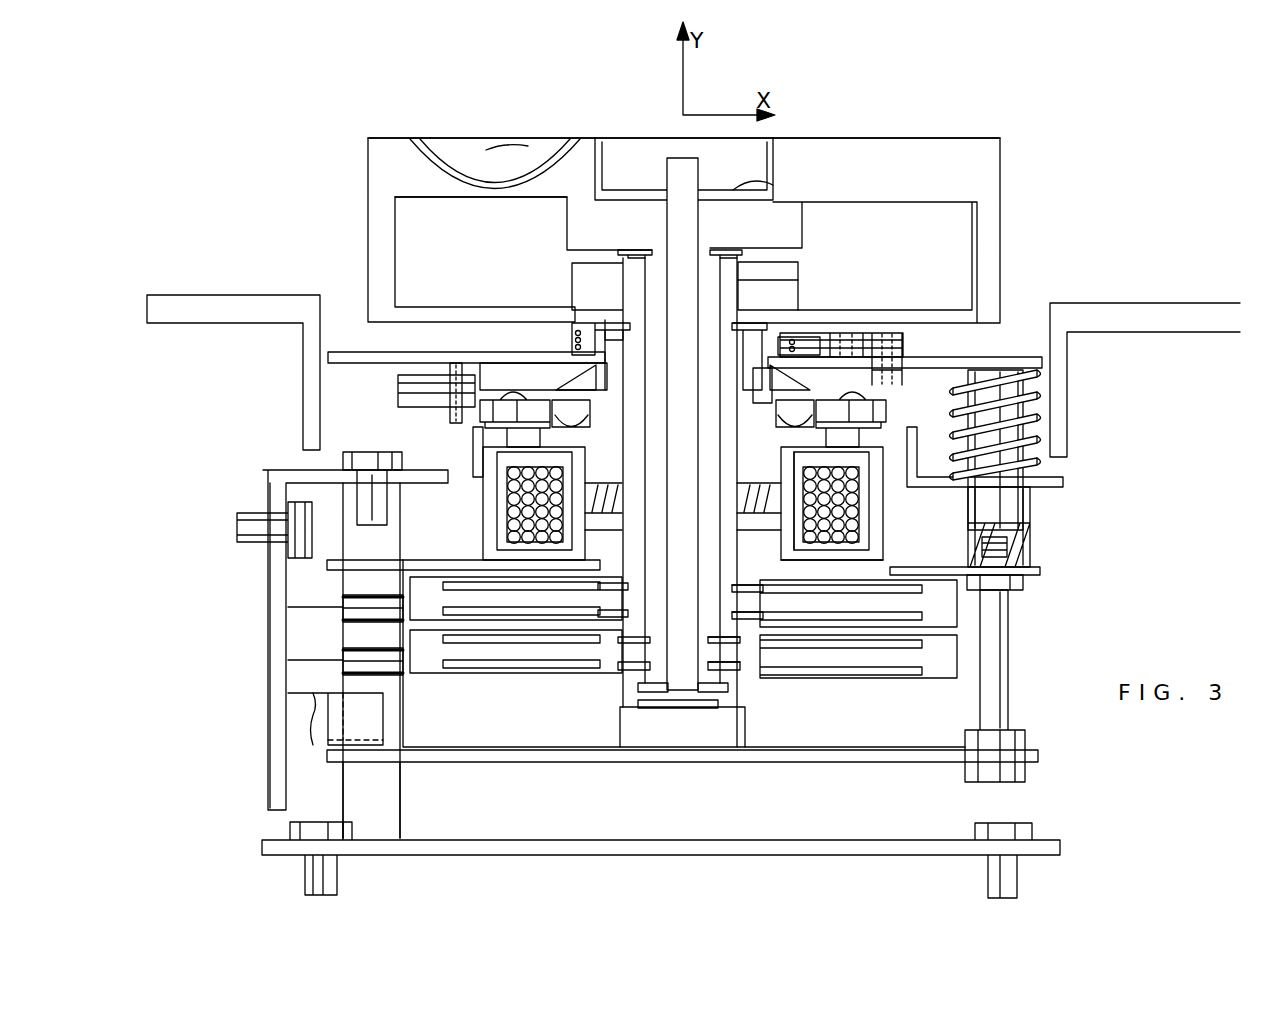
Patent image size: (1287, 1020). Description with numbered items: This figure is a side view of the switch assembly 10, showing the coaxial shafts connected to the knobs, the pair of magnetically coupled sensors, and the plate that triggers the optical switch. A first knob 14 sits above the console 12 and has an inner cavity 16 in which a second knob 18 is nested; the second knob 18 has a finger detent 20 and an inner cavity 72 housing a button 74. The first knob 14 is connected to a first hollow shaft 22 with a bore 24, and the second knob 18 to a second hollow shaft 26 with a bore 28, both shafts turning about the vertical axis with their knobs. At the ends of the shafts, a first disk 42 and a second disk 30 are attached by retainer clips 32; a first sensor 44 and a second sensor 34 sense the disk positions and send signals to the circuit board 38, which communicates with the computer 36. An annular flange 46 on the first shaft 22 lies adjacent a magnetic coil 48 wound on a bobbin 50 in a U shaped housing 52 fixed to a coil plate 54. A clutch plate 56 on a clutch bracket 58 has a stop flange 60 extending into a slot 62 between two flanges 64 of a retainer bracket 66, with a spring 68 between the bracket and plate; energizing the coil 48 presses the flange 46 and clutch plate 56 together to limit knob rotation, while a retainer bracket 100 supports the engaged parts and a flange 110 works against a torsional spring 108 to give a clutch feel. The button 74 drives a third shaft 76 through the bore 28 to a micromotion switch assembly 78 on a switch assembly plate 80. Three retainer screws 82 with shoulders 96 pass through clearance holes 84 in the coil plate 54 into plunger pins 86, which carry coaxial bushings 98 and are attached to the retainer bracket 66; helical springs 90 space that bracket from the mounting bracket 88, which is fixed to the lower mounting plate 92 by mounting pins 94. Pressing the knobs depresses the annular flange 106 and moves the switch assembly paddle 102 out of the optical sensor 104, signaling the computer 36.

The switch assembly 10 is at (897, 127).
The console 12 is at (203, 297).
The first knob 14 is at (380, 150).
The inner cavity 16 is at (467, 252).
The second knob 18 is at (955, 150).
The finger detent 20 is at (462, 168).
The first hollow shaft 22 is at (755, 300).
The bore 24 is at (738, 318).
The second hollow shaft 26 is at (707, 220).
The bore 28 is at (710, 236).
The second disk 30 is at (950, 607).
The retainer clips 32 is at (735, 668).
The second sensor 34 is at (355, 607).
The computer 36 is at (272, 600).
The circuit board 38 is at (280, 635).
The first disk 42 is at (950, 652).
The first sensor 44 is at (352, 656).
The annular flange 46 is at (545, 430).
The magnetic coil 48 is at (843, 500).
The bobbin 50 is at (862, 550).
The U shaped housing 52 is at (883, 555).
The coil plate 54 is at (1040, 572).
The clutch plate 56 is at (490, 385).
The clutch bracket 58 is at (600, 380).
The stop flange 60 is at (400, 384).
The slot 62 is at (372, 474).
The flanges 64 is at (455, 421).
The retainer bracket 66 is at (330, 358).
The spring 68 is at (515, 400).
The inner cavity 72 is at (742, 192).
The button 74 is at (616, 147).
The third shaft 76 is at (674, 170).
The micromotion switch assembly 78 is at (684, 736).
The switch assembly plate 80 is at (588, 762).
The retainer screws 82 is at (1000, 725).
The clearance holes 84 is at (1008, 550).
The plunger pins 86 is at (995, 482).
The mounting bracket 88 is at (268, 480).
The helical springs 90 is at (1040, 415).
The lower mounting plate 92 is at (490, 850).
The mounting pins 94 is at (400, 810).
The shoulder 96 is at (1020, 588).
The coaxial bushings 98 is at (1030, 507).
The retainer bracket 100 is at (880, 395).
The switch assembly paddle 102 is at (360, 722).
The optical sensor 104 is at (298, 740).
The annular flange 106 is at (580, 325).
The torsional spring 108 is at (903, 346).
The flange 110 is at (890, 348).